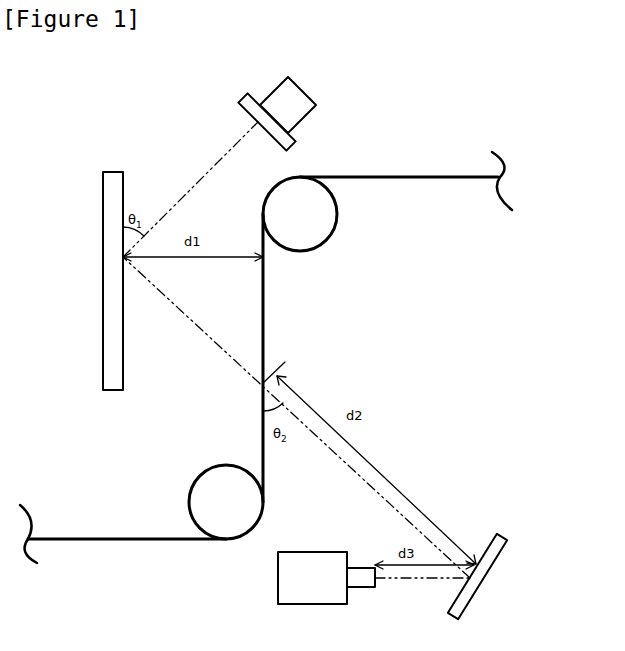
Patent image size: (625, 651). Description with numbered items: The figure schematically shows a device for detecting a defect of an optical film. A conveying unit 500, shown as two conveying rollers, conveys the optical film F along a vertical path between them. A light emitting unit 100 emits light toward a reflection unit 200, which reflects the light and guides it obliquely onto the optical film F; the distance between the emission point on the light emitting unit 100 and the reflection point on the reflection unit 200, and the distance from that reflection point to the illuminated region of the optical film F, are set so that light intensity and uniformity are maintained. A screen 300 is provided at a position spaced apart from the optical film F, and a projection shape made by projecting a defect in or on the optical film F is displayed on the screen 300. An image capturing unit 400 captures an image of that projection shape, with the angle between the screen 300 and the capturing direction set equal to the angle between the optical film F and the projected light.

The light emitting unit 100 is at (278, 575).
The reflection unit 200 is at (489, 577).
The screen 300 is at (103, 318).
The image capturing unit 400 is at (304, 112).
The conveying unit 500 is at (332, 230).
The optical film F is at (263, 302).